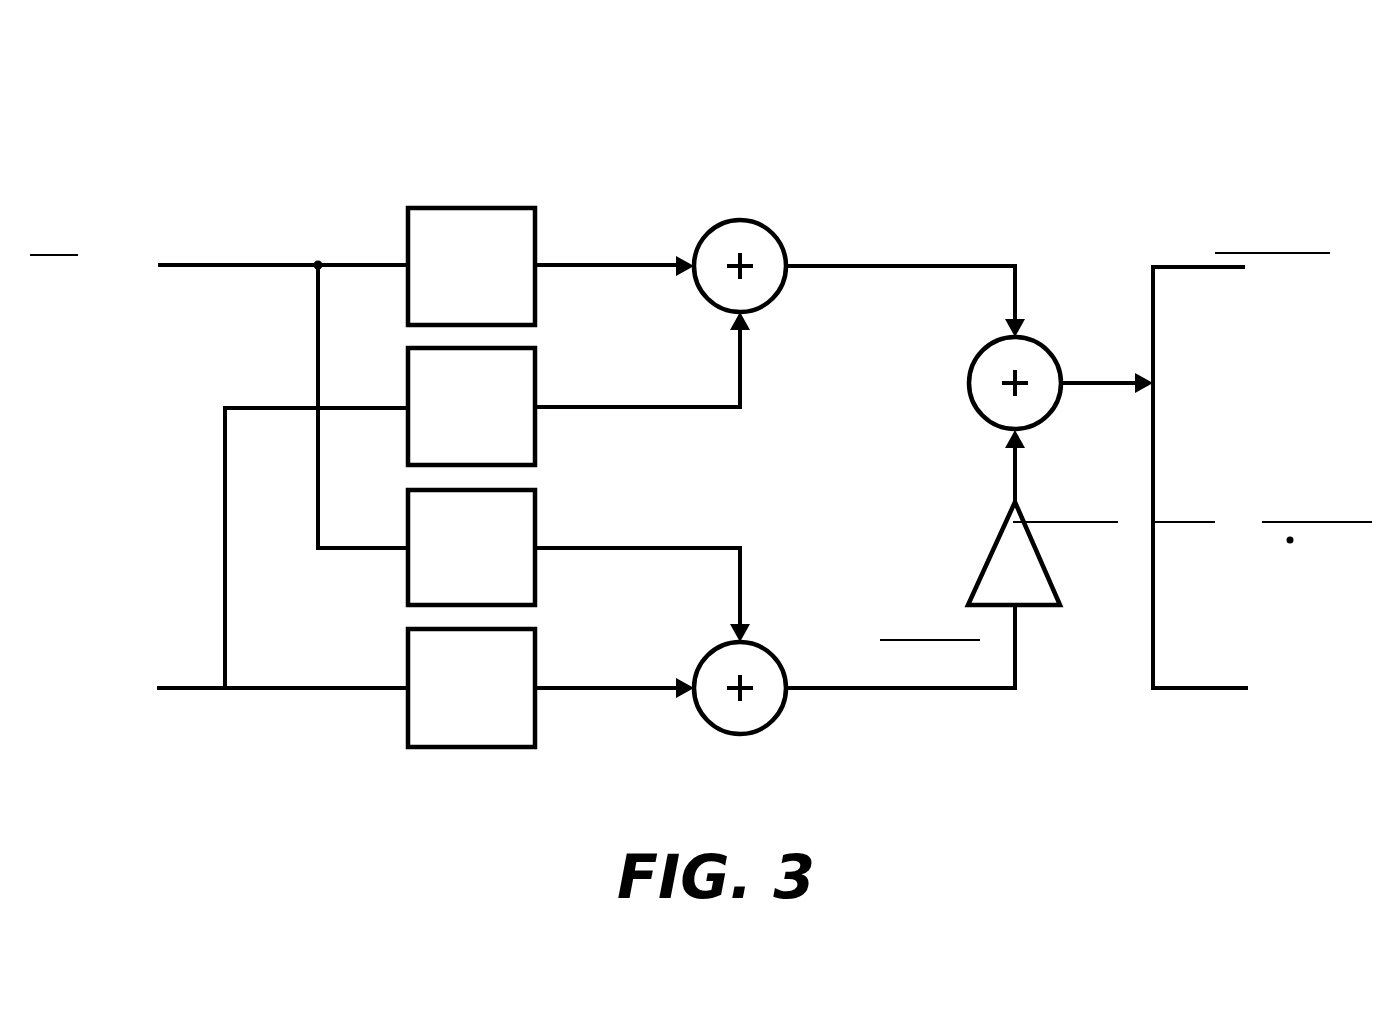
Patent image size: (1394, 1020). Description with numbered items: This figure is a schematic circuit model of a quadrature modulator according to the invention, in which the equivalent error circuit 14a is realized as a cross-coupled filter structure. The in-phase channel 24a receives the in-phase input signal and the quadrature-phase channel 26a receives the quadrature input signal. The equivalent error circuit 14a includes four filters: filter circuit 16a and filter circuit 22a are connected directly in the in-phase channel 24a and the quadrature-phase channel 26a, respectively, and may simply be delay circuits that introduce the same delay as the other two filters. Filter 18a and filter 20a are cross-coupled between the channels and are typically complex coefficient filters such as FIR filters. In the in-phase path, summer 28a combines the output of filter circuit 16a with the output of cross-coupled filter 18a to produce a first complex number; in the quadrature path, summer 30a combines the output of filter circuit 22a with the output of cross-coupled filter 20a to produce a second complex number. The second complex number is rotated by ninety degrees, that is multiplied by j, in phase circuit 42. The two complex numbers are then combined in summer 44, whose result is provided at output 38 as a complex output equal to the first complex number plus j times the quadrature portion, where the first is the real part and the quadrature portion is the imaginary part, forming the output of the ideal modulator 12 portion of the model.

The equivalent error circuit 14a is at (340, 162).
The in-phase channel 24a is at (178, 265).
The quadrature-phase channel 26a is at (178, 688).
The filter circuit 16a is at (538, 226).
The filter 18a is at (538, 366).
The filter 20a is at (538, 508).
The filter circuit 22a is at (538, 647).
The summer 28a is at (757, 221).
The summer 30a is at (709, 727).
The summer 44 is at (990, 345).
The phase circuit 42 is at (988, 556).
The output 38 is at (1097, 382).
The ideal modulator 12 is at (1222, 451).